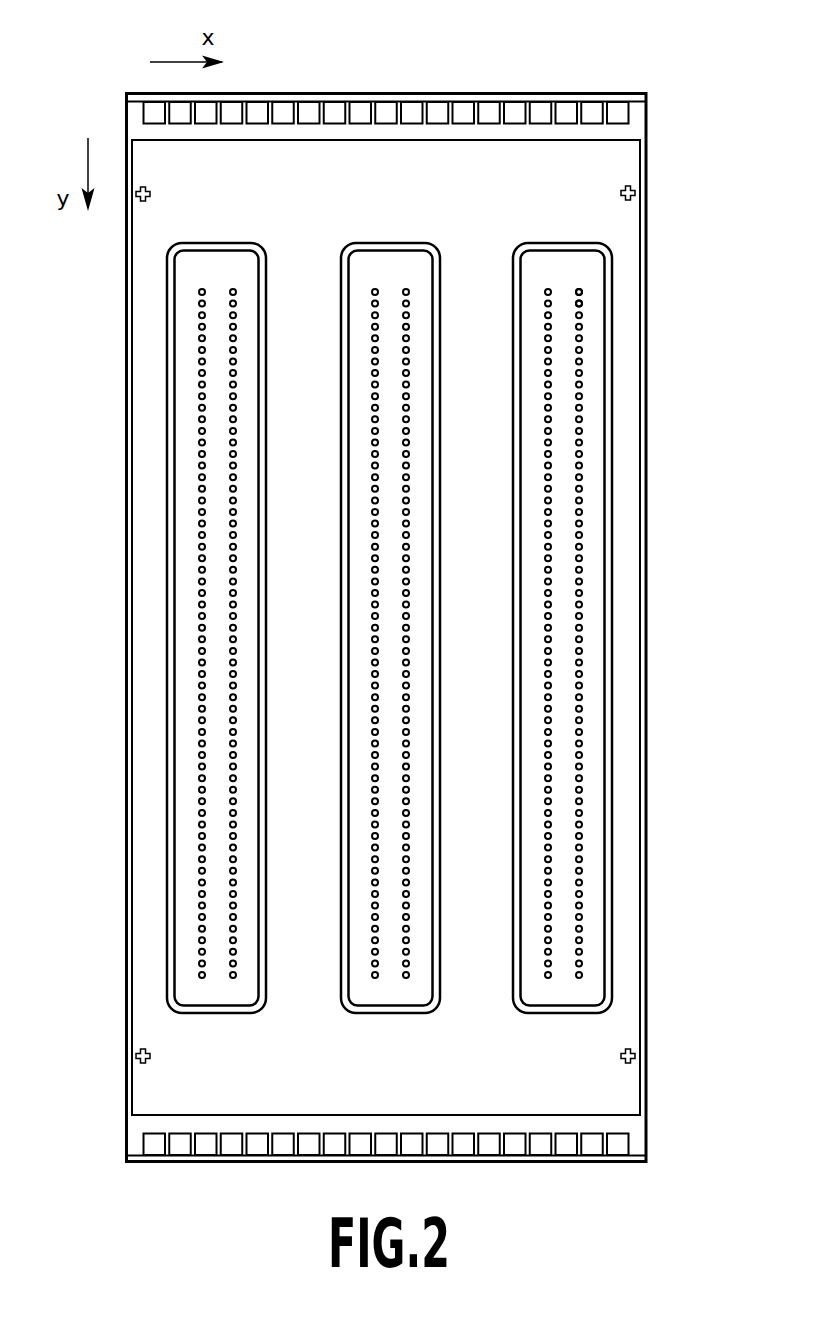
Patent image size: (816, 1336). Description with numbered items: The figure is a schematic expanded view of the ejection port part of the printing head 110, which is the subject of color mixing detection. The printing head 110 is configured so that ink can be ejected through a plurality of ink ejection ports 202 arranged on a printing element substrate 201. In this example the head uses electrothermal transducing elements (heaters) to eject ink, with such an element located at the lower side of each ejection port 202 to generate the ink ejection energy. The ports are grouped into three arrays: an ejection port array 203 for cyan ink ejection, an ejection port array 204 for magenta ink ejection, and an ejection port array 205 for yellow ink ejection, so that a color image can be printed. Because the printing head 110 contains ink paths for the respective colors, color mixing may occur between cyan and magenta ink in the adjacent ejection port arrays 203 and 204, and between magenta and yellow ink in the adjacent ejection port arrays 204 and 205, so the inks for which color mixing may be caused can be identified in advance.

The printing head 110 is at (583, 68).
The printing element substrate 201 is at (607, 129).
The ink ejection port 202 is at (582, 292).
The ejection port array 203 is at (215, 1015).
The ejection port array 204 is at (387, 1015).
The ejection port array 205 is at (562, 1015).